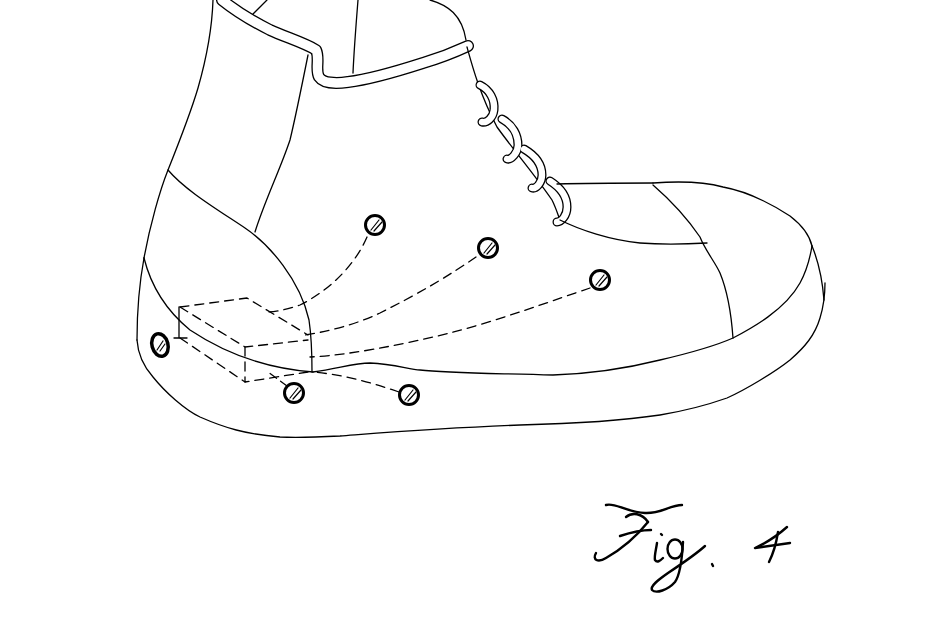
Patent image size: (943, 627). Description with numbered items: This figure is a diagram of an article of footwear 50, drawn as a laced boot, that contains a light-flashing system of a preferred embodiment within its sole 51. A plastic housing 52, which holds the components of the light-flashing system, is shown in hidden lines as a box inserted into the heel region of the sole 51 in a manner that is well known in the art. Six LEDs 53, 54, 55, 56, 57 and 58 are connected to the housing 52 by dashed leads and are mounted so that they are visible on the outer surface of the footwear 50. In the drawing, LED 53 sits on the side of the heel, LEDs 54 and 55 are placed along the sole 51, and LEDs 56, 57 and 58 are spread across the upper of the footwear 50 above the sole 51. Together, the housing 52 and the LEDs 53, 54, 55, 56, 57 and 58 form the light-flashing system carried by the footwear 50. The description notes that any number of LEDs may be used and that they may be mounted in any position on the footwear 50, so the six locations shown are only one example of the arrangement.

The footwear 50 is at (521, 117).
The sole 51 is at (347, 415).
The plastic housing 52 is at (212, 358).
The LED 53 is at (151, 347).
The LED 54 is at (291, 403).
The LED 55 is at (410, 405).
The LED 56 is at (377, 214).
The LED 57 is at (487, 238).
The LED 58 is at (596, 272).